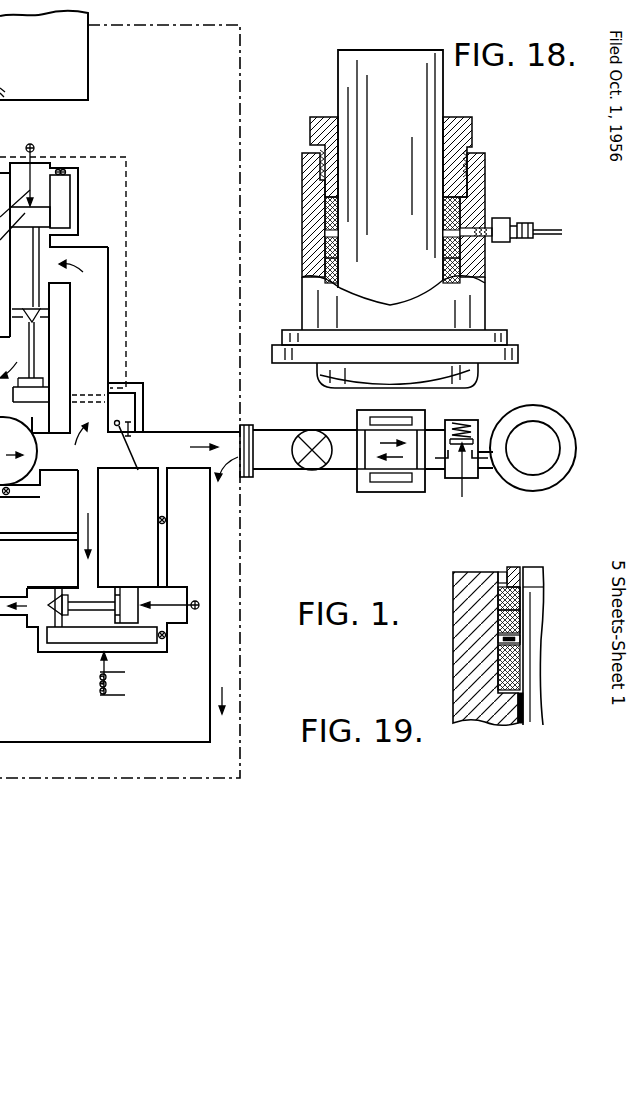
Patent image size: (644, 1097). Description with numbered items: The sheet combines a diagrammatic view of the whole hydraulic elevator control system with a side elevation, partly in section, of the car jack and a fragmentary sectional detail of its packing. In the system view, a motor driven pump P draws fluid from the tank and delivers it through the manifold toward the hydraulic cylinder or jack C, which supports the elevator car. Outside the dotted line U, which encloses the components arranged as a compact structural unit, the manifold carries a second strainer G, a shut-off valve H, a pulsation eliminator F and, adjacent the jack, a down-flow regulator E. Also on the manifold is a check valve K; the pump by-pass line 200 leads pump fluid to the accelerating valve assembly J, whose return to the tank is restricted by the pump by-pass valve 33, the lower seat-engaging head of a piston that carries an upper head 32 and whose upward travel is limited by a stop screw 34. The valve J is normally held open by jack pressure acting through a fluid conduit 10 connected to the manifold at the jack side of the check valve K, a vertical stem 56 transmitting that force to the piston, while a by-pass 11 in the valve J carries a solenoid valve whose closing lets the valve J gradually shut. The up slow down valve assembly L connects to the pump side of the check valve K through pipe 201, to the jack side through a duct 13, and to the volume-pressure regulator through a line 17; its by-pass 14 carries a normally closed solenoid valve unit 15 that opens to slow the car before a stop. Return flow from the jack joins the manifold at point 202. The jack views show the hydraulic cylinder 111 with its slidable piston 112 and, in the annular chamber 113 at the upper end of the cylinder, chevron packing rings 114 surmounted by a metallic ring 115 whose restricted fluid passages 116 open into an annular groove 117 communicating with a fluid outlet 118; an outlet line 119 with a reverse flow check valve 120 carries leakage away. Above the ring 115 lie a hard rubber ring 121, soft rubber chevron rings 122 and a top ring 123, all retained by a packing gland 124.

In FIG. 1, the by-pass 11 is at (78, 207).
In FIG. 1, the accelerating valve assembly J is at (126, 256).
In FIG. 1, the dotted line U is at (240, 173).
In FIG. 1, the pump by-pass valve 33 is at (33, 326).
In FIG. 1, the vertical stem 56 is at (34, 377).
In FIG. 1, the fluid conduit 10 is at (142, 393).
In FIG. 1, the pump by-pass line 200 is at (87, 410).
In FIG. 1, the check valve K is at (133, 452).
In FIG. 1, the pipe 201 is at (88, 503).
In FIG. 1, the point 202 is at (215, 490).
In FIG. 1, the duct 13 is at (167, 548).
In FIG. 1, the line 17 is at (25, 541).
In FIG. 1, the upper head 32 is at (130, 590).
In FIG. 1, the stop screw 34 is at (177, 612).
In FIG. 1, the by-pass 14 is at (133, 652).
In FIG. 1, the up slow down valve assembly L is at (63, 655).
In FIG. 1, the solenoid valve unit 15 is at (100, 648).
In FIG. 1, the motor driven pump P is at (39, 457).
In FIG. 1, the second strainer G is at (247, 478).
In FIG. 1, the shut-off valve H is at (316, 469).
In FIG. 1, the pulsation eliminator F is at (407, 492).
In FIG. 1, the down-flow regulator E is at (470, 423).
In FIG. 1, the hydraulic cylinder or jack C is at (545, 405).
In FIG. 18, the hydraulic cylinder or jack C is at (499, 137).
In FIG. 18, the packing gland 124 is at (320, 115).
In FIG. 19, the packing gland 124 is at (521, 568).
In FIG. 18, the slidable piston 112 is at (445, 98).
In FIG. 19, the slidable piston 112 is at (537, 633).
In FIG. 18, the fluid outlet 118 is at (483, 203).
In FIG. 18, the metallic ring 115 is at (327, 233).
In FIG. 19, the metallic ring 115 is at (523, 630).
In FIG. 18, the annular chamber 113 is at (327, 258).
In FIG. 19, the annular chamber 113 is at (503, 653).
In FIG. 18, the chevron packing rings 114 is at (328, 272).
In FIG. 19, the chevron packing rings 114 is at (523, 670).
In FIG. 18, the reverse flow check valve 120 is at (499, 240).
In FIG. 18, the outlet line 119 is at (550, 238).
In FIG. 18, the hydraulic cylinder 111 is at (487, 307).
In FIG. 19, the hydraulic cylinder 111 is at (453, 672).
In FIG. 19, the soft rubber chevron rings 122 is at (503, 600).
In FIG. 19, the hard rubber ring 121 is at (503, 623).
In FIG. 19, the annular groove 117 is at (503, 638).
In FIG. 19, the top ring 123 is at (540, 587).
In FIG. 19, the restricted fluid passages 116 is at (522, 640).